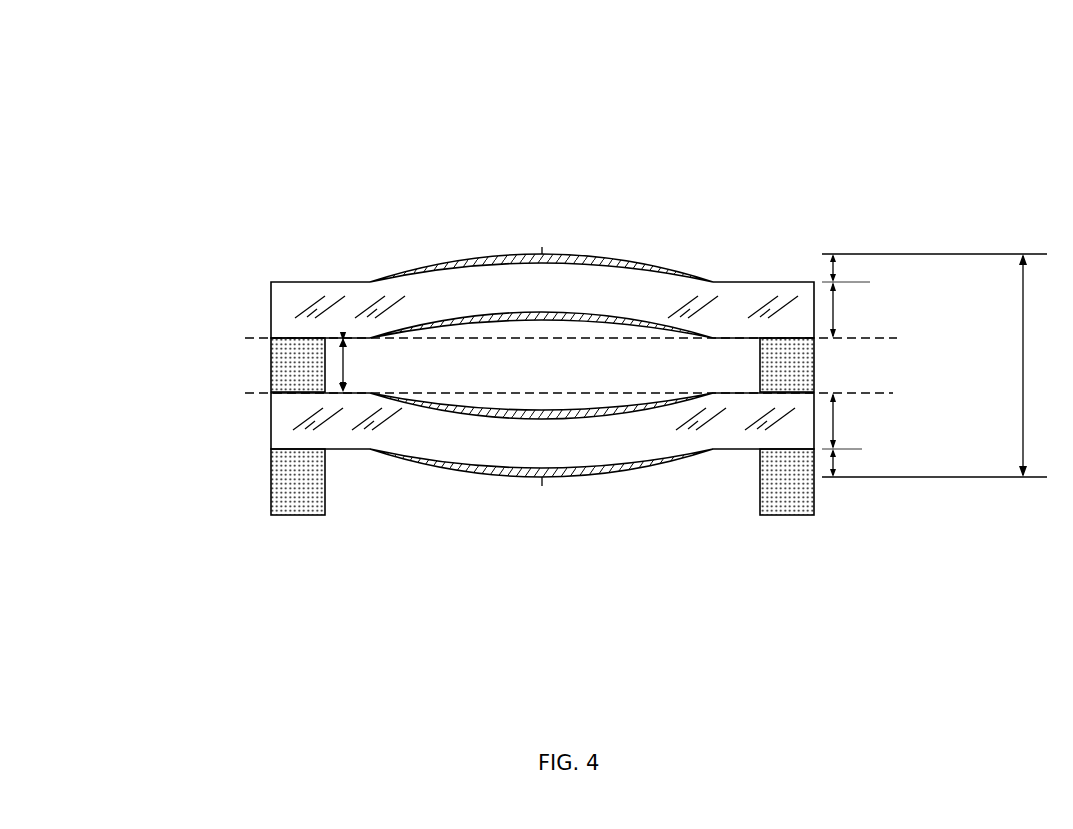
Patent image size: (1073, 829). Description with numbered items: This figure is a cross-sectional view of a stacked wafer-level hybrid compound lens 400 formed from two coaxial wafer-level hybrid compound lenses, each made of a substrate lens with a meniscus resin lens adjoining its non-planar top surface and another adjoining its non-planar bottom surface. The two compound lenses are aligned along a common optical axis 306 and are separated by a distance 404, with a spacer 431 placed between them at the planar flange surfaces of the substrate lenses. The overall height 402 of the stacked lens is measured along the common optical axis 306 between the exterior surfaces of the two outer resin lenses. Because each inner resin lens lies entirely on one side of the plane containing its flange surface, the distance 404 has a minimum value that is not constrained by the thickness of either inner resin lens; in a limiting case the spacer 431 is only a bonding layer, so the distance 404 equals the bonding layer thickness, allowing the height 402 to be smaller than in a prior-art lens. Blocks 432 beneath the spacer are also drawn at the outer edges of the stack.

The stacked wafer-level hybrid compound lens 400 is at (168, 46).
The common optical axis 306 is at (542, 222).
The height 402 is at (1022, 365).
The distance 404 is at (358, 365).
The spacer 431 is at (542, 365).
The bonding block 432 is at (542, 482).